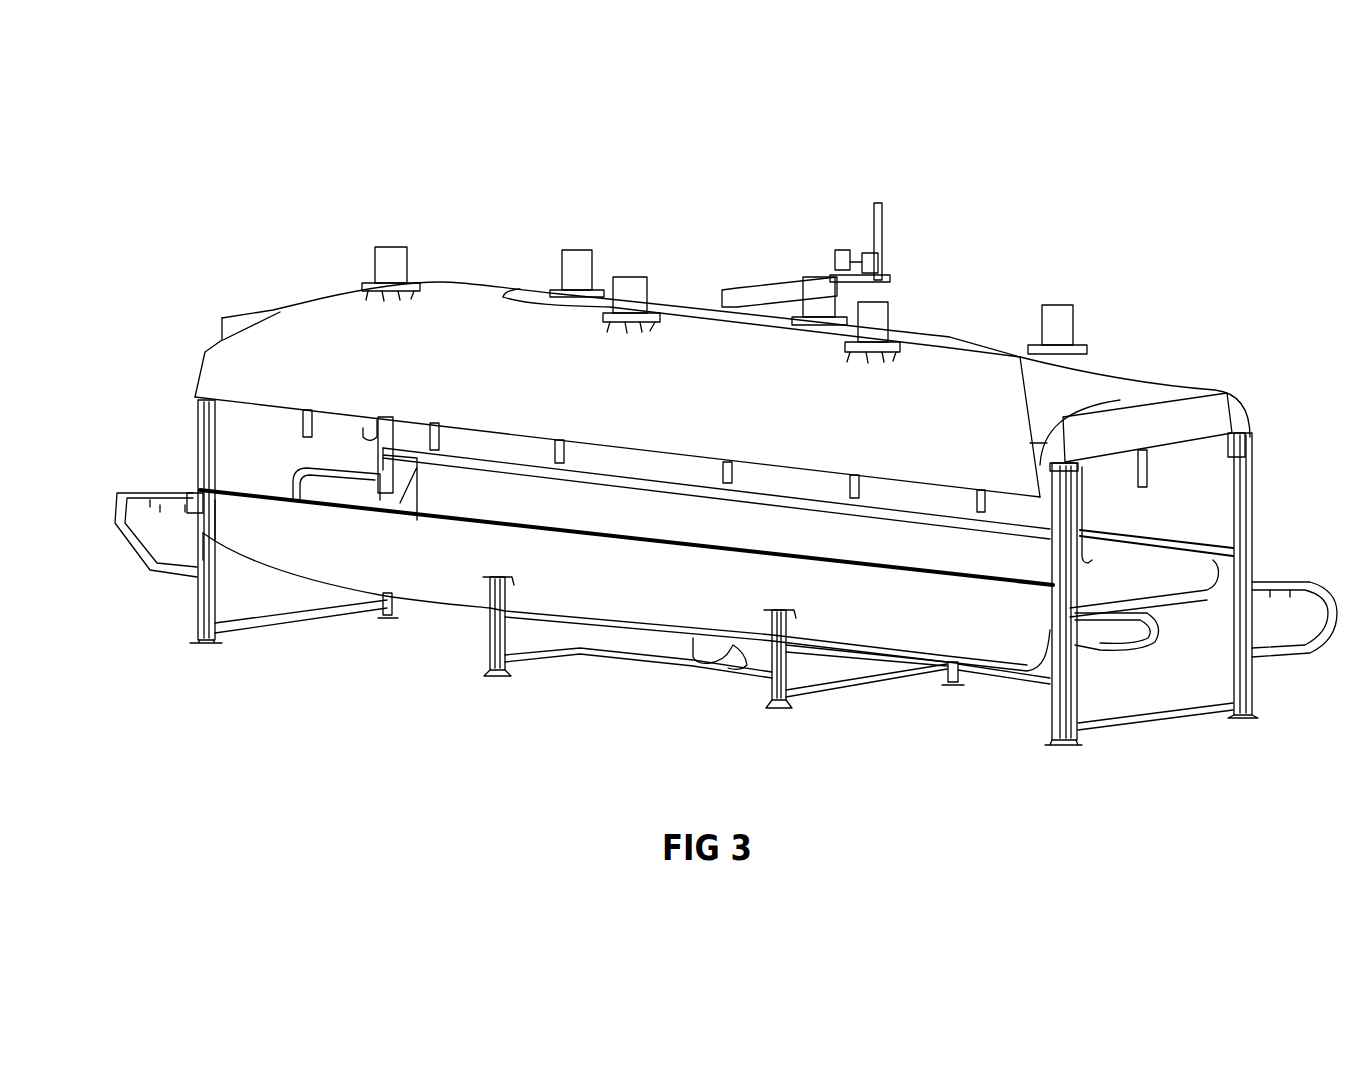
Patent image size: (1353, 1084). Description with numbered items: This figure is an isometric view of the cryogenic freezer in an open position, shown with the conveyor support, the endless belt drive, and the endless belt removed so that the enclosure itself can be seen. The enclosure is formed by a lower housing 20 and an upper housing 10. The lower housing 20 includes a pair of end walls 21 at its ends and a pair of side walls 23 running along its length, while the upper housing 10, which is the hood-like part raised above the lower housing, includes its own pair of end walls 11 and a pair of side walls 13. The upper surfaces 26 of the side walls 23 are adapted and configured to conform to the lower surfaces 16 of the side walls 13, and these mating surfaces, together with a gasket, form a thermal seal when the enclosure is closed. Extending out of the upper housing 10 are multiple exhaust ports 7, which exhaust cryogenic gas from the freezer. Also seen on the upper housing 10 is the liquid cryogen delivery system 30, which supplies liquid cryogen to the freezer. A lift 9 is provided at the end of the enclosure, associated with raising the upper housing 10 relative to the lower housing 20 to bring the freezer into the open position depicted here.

The exhaust ports 7 is at (393, 262).
The upper housing 10 is at (493, 360).
The liquid cryogen delivery system 30 is at (713, 297).
The side walls 13 is at (243, 373).
The end walls 11 is at (1057, 447).
The lift 9 is at (1053, 473).
The upper surfaces 26 is at (608, 526).
The lower surfaces 16 is at (632, 455).
The side walls 23 is at (307, 523).
The end walls 21 is at (380, 497).
The lower housing 20 is at (880, 623).